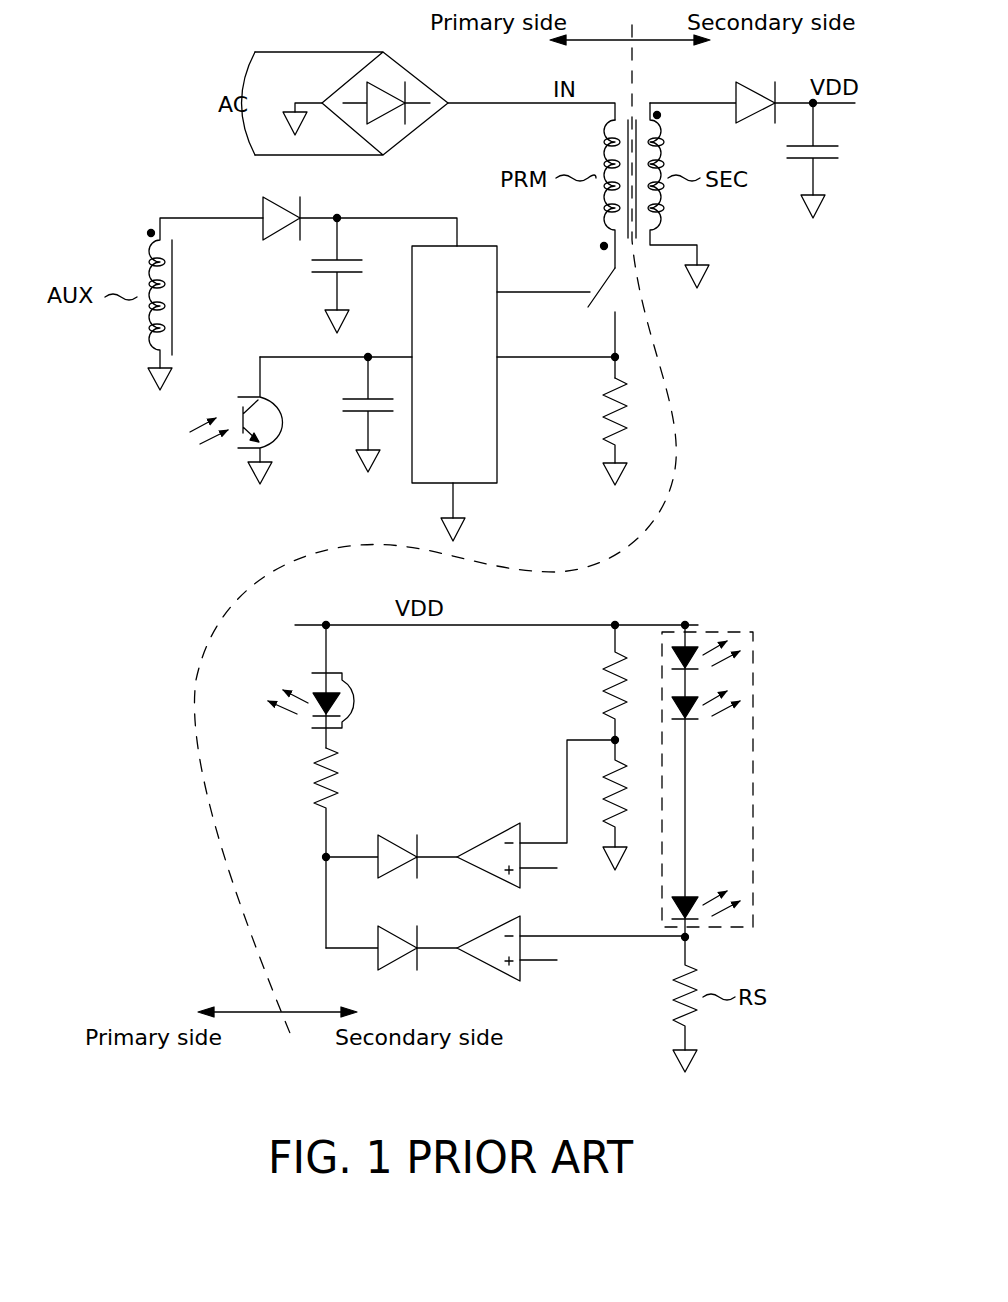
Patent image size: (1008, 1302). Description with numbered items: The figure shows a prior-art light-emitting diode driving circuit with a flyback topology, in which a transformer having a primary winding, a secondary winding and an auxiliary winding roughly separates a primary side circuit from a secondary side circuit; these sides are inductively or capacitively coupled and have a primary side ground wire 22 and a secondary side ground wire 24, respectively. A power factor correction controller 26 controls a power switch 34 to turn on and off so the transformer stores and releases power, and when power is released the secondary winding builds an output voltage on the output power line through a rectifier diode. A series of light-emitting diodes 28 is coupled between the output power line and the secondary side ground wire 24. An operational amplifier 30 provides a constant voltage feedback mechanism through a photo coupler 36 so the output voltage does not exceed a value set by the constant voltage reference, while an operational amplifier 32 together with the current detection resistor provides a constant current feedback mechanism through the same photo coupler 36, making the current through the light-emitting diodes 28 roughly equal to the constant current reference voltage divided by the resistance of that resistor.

The primary side ground wire 22 is at (603, 473).
The secondary side ground wire 24 is at (700, 284).
The power factor correction (PFC) controller 26 is at (468, 426).
The series of light-emitting diodes 28 is at (753, 663).
The operational amplifier 30 is at (492, 835).
The operational amplifier 32 is at (492, 923).
The power switch 34 is at (598, 280).
The photo coupler 36 is at (357, 700).